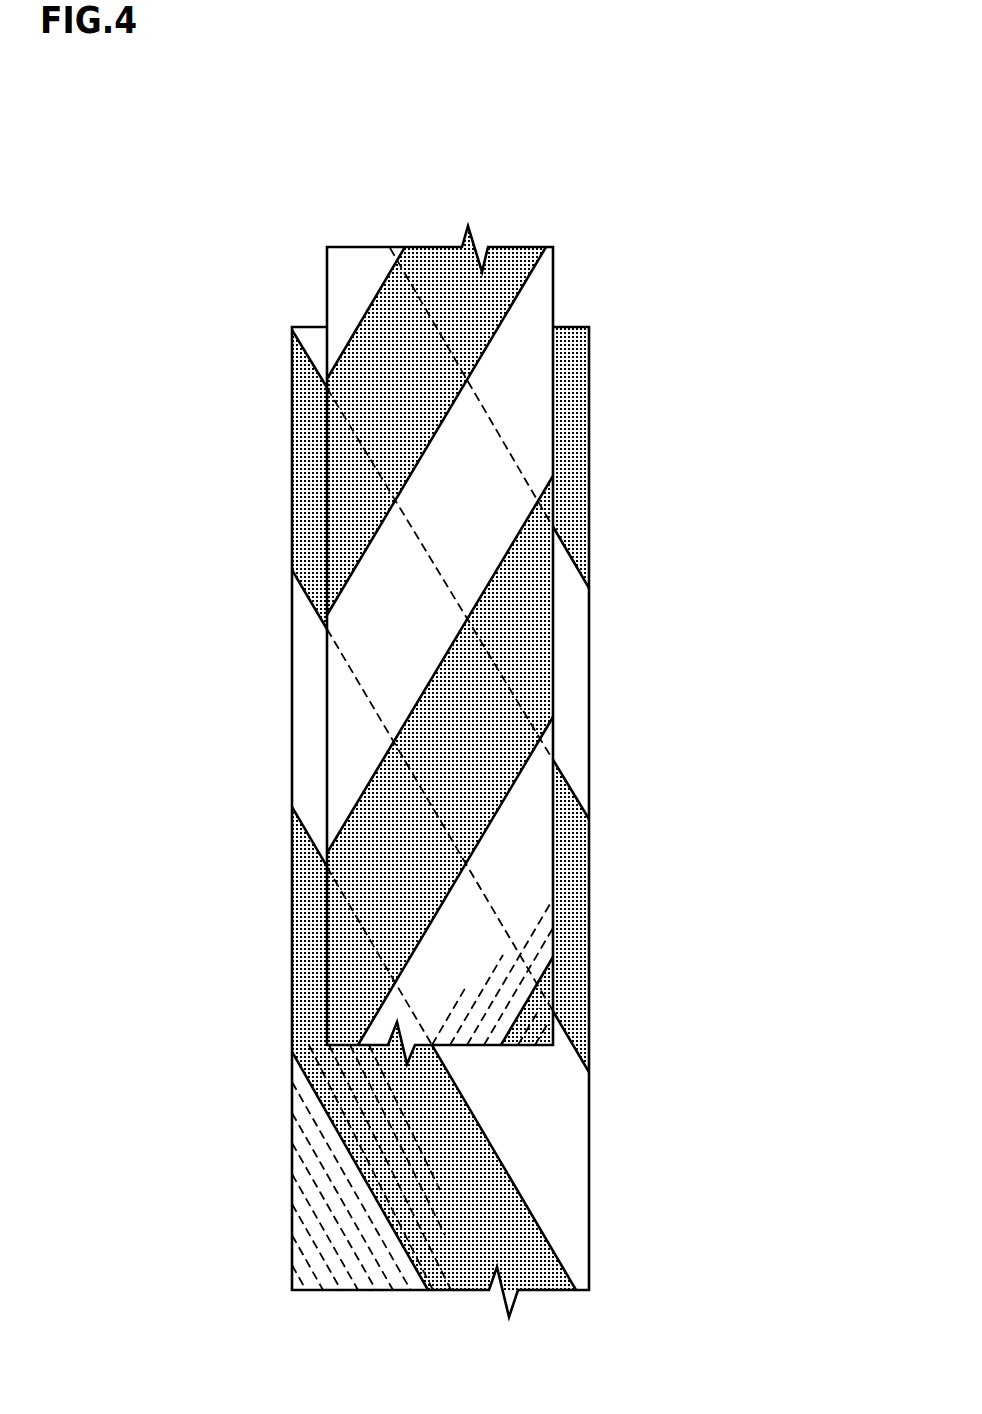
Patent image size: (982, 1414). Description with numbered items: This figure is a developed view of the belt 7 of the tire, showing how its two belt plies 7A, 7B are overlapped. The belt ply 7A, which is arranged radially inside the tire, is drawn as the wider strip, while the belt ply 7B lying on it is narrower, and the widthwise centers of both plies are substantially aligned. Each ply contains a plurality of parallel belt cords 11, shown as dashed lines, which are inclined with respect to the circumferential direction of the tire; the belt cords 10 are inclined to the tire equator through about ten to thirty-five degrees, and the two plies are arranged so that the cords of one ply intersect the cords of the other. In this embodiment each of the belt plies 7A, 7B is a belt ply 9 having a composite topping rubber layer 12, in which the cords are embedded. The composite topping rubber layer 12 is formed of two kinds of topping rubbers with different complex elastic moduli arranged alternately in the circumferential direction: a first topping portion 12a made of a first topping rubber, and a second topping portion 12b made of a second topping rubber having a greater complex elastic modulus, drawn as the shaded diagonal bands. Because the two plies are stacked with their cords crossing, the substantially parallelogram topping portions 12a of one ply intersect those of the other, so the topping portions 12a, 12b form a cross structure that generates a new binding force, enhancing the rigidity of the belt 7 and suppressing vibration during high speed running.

The belt 7 is at (812, 180).
The belt ply 7A is at (583, 319).
The belt ply 7B is at (565, 256).
The belt ply 9 is at (572, 748).
The belt cords 10 is at (555, 952).
The belt cords 11 is at (692, 933).
The composite topping rubber layer 12 is at (737, 475).
The first topping portion 12a is at (360, 263).
The second topping portion 12b is at (378, 347).